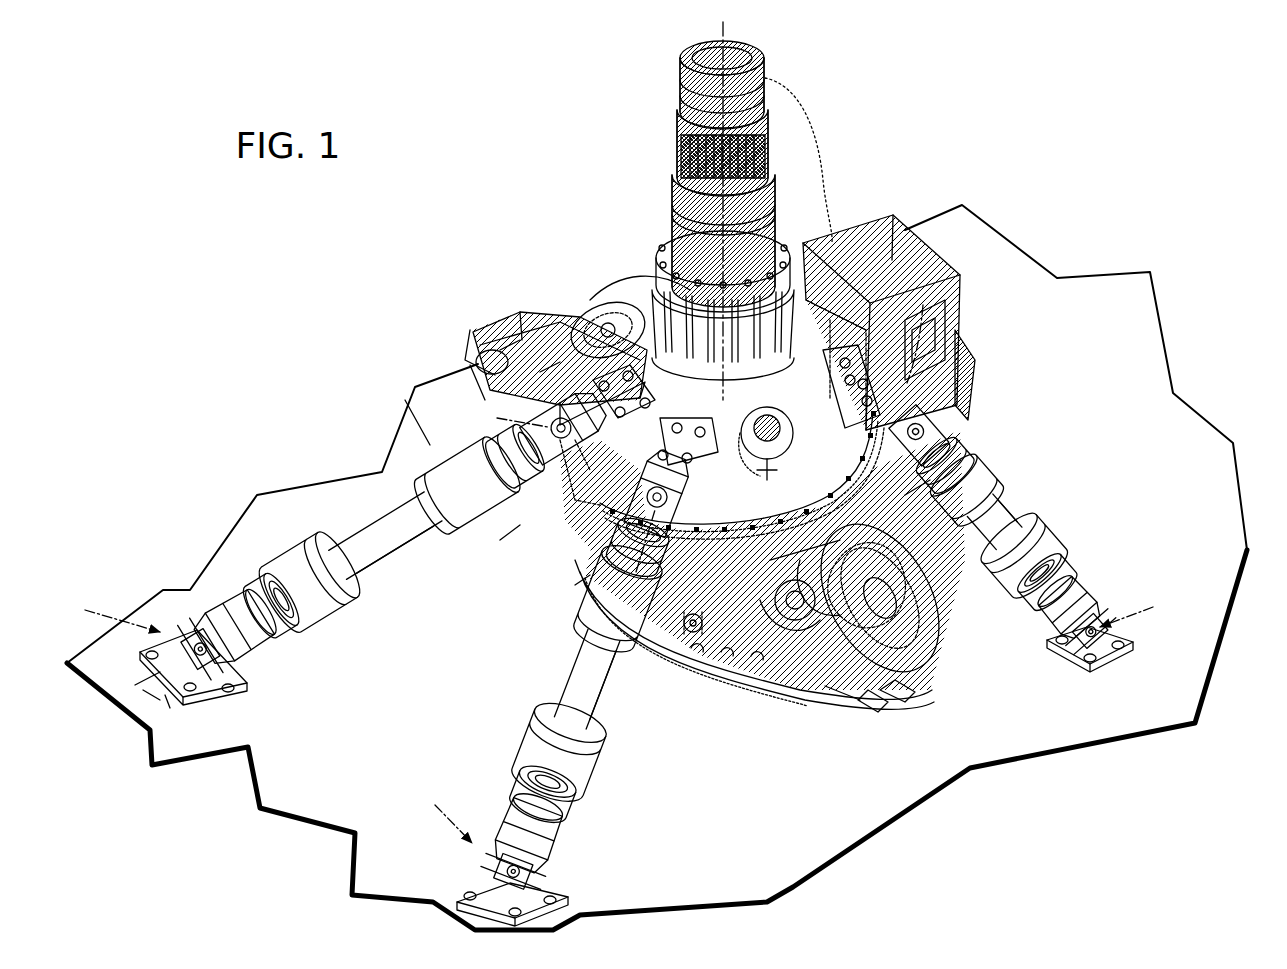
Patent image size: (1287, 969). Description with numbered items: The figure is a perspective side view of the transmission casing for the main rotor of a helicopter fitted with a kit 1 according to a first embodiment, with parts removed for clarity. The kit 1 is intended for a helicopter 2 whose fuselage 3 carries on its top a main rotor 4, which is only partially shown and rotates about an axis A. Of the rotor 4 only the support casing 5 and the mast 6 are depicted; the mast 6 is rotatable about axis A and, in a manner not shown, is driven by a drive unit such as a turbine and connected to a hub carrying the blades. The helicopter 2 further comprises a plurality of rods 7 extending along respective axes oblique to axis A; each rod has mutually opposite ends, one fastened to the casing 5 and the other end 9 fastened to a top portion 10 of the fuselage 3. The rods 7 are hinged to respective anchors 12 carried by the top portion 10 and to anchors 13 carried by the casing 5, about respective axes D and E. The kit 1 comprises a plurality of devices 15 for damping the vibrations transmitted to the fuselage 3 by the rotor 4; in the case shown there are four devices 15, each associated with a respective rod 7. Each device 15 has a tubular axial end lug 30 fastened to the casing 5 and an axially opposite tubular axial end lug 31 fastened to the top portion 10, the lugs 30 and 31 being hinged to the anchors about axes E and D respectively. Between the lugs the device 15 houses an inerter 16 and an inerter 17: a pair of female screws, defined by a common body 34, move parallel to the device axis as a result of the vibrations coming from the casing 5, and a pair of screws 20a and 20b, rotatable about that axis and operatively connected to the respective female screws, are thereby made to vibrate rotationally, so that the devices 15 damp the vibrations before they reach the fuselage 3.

The kit 1 is at (424, 440).
The helicopter 2 is at (1005, 172).
The fuselage 3 is at (1123, 420).
The main rotor 4 is at (622, 283).
The support casing 5 is at (643, 373).
The mast 6 is at (680, 116).
The rods 7 is at (200, 628).
The end 9 is at (200, 643).
The top portion 10 is at (938, 745).
The anchors 12 is at (213, 690).
The anchors 13 is at (633, 395).
The devices 15 is at (424, 558).
The inerter 16 is at (299, 535).
The inerter 17 is at (499, 542).
The screw 20a is at (293, 603).
The screw 20b is at (490, 487).
The tubular axial end lug 30 is at (572, 420).
The tubular axial end lug 31 is at (243, 640).
The body 34 is at (379, 505).
The axis A is at (775, 70).
The axis D is at (618, 708).
The axis E is at (700, 439).